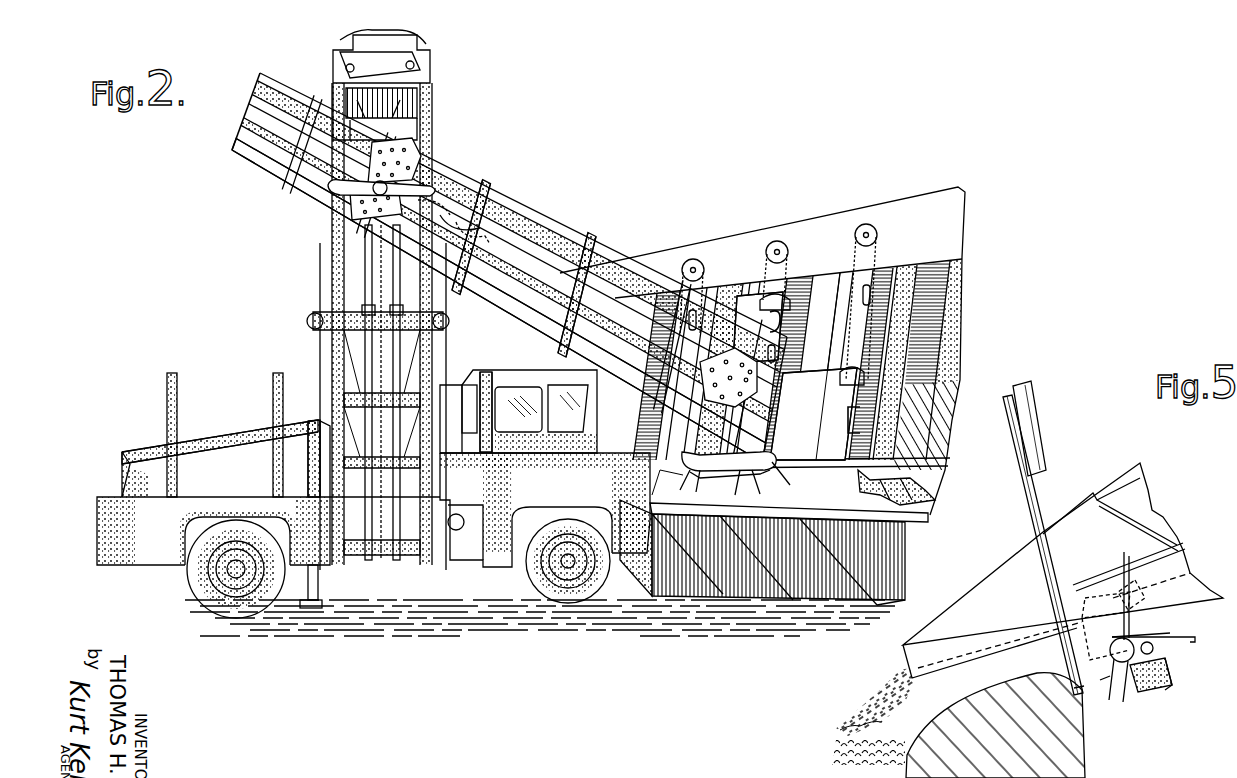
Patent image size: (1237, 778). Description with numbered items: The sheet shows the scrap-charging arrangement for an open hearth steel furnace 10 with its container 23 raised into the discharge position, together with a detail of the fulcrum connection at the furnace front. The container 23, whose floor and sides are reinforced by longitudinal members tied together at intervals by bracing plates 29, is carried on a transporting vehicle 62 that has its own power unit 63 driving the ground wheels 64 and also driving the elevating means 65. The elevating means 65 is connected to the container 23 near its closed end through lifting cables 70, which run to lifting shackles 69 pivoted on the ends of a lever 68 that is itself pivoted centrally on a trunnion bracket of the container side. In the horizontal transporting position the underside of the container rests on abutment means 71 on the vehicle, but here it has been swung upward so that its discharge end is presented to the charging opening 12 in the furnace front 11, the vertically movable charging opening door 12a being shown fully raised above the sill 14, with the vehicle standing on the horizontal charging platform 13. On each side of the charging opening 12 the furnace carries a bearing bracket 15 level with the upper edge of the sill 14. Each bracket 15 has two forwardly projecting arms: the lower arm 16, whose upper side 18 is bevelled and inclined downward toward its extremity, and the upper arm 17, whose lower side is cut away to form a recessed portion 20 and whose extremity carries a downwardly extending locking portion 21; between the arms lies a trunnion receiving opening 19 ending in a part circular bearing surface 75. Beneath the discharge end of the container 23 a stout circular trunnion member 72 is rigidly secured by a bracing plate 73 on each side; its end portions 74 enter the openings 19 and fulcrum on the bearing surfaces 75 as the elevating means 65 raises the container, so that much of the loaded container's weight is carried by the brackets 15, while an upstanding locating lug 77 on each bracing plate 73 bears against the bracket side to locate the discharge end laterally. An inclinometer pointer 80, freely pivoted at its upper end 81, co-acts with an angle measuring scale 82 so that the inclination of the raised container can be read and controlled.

In FIG. 2, the open hearth steel furnace 10 is at (722, 246).
In FIG. 2, the furnace front 11 is at (818, 298).
In FIG. 5, the furnace front 11 is at (1028, 484).
In FIG. 2, the charging opening 12 is at (780, 432).
In FIG. 5, the charging opening 12 is at (1041, 482).
In FIG. 2, the charging opening door 12a is at (760, 278).
In FIG. 5, the charging opening door 12a is at (1039, 438).
In FIG. 2, the charging platform 13 is at (672, 605).
In FIG. 5, the sill 14 is at (995, 725).
In FIG. 2, the bearing bracket 15 is at (784, 466).
In FIG. 5, the bearing bracket 15 is at (1068, 654).
In FIG. 5, the lower arm 16 is at (1168, 688).
In FIG. 5, the upper arm 17 is at (1138, 590).
In FIG. 5, the upper side of lower arm 18 is at (1165, 672).
In FIG. 5, the trunnion receiving opening 19 is at (1156, 650).
In FIG. 5, the recessed portion 20 is at (1168, 635).
In FIG. 5, the locking portion 21 is at (1156, 630).
In FIG. 2, the container 23 is at (508, 248).
In FIG. 5, the container 23 is at (1063, 570).
In FIG. 2, the bracing plates 29 is at (558, 265).
In FIG. 2, the transporting vehicle 62 is at (318, 570).
In FIG. 2, the power unit 63 is at (236, 442).
In FIG. 2, the ground wheels 64 is at (259, 610).
In FIG. 2, the elevating means 65 is at (362, 266).
In FIG. 2, the lever 68 is at (421, 170).
In FIG. 2, the lifting shackles 69 is at (320, 197).
In FIG. 2, the lifting cables 70 is at (340, 76).
In FIG. 2, the abutment means 71 is at (570, 438).
In FIG. 2, the trunnion member 72 is at (743, 472).
In FIG. 5, the bracing plate 73 is at (1122, 560).
In FIG. 5, the end portions of trunnion member 74 is at (1123, 671).
In FIG. 5, the part circular bearing surface 75 is at (1100, 690).
In FIG. 5, the locating lug 77 is at (1106, 625).
In FIG. 2, the pointer 80 is at (480, 228).
In FIG. 2, the upper end of pointer 81 is at (450, 215).
In FIG. 2, the angle measuring scale 82 is at (494, 215).